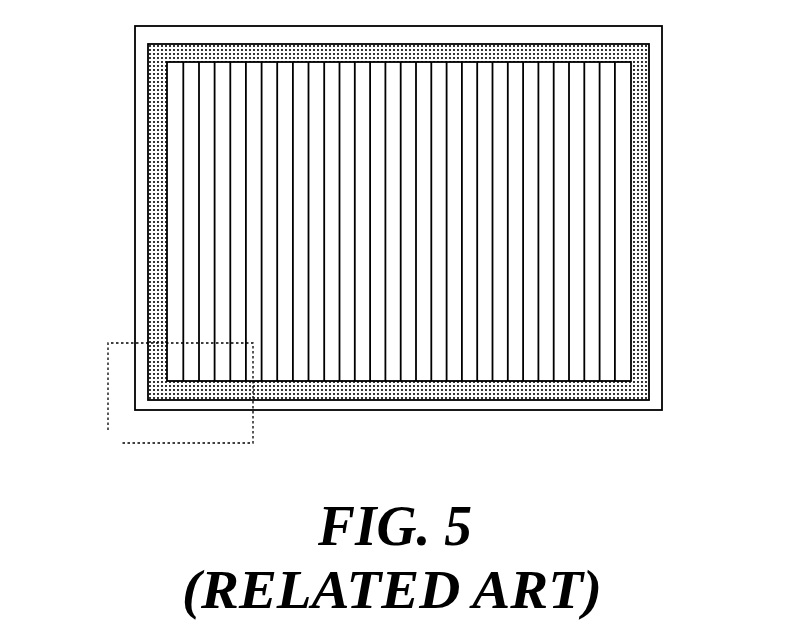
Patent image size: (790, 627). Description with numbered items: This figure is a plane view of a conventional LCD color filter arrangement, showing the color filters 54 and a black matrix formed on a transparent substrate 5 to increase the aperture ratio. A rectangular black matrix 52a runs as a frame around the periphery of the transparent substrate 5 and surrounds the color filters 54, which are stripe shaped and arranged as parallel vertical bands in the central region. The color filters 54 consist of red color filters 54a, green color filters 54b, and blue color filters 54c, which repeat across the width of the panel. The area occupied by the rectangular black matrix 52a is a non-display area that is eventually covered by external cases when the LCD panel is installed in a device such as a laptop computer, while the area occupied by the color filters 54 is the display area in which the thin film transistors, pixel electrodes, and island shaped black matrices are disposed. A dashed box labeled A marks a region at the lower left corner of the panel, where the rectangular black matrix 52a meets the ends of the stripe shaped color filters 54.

The transparent substrate 5 is at (658, 50).
The rectangular black matrix 52a is at (638, 387).
The color filters 54 is at (318, 221).
The red color filter 54a is at (175, 125).
The green color filter 54b is at (196, 172).
The blue color filter 54c is at (206, 217).
The detail region A is at (178, 397).